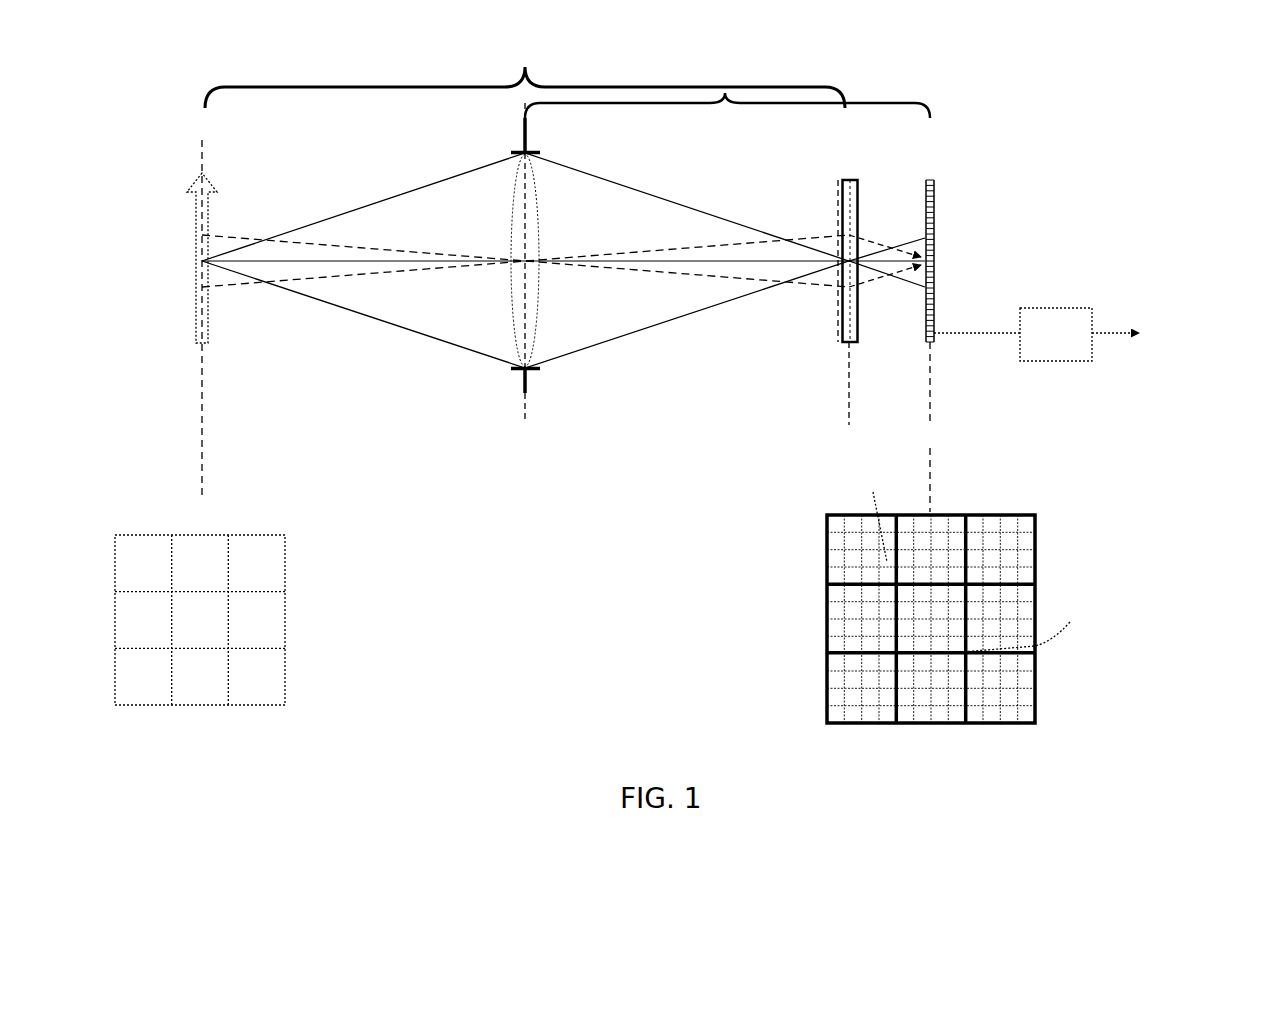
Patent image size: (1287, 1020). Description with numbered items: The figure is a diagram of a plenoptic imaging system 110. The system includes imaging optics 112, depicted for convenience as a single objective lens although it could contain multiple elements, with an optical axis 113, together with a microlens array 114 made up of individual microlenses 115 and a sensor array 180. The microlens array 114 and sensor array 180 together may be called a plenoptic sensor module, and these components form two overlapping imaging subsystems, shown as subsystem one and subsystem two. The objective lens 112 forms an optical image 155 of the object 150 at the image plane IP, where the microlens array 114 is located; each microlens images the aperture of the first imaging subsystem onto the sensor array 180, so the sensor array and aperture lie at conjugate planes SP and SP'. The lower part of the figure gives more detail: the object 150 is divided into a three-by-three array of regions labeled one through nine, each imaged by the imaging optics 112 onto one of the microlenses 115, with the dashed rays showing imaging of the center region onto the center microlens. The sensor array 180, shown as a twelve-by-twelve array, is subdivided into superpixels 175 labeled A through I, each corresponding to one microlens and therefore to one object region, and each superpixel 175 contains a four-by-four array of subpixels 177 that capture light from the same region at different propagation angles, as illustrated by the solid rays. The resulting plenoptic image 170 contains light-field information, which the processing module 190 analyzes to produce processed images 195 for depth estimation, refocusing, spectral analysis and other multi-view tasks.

The plenoptic imaging system 110 is at (979, 153).
The imaging optics 112 is at (510, 181).
The optical axis 113 is at (438, 254).
The microlens array 114 is at (866, 179).
The microlenses 115 is at (836, 216).
The object 150 is at (210, 199).
The optical image 155 is at (837, 318).
The plenoptic image 170 is at (920, 234).
The superpixels 175 is at (824, 554).
The subpixels 177 is at (1030, 557).
The sensor array 180 is at (939, 205).
The processing module 190 is at (1013, 334).
The processed images 195 is at (1174, 333).